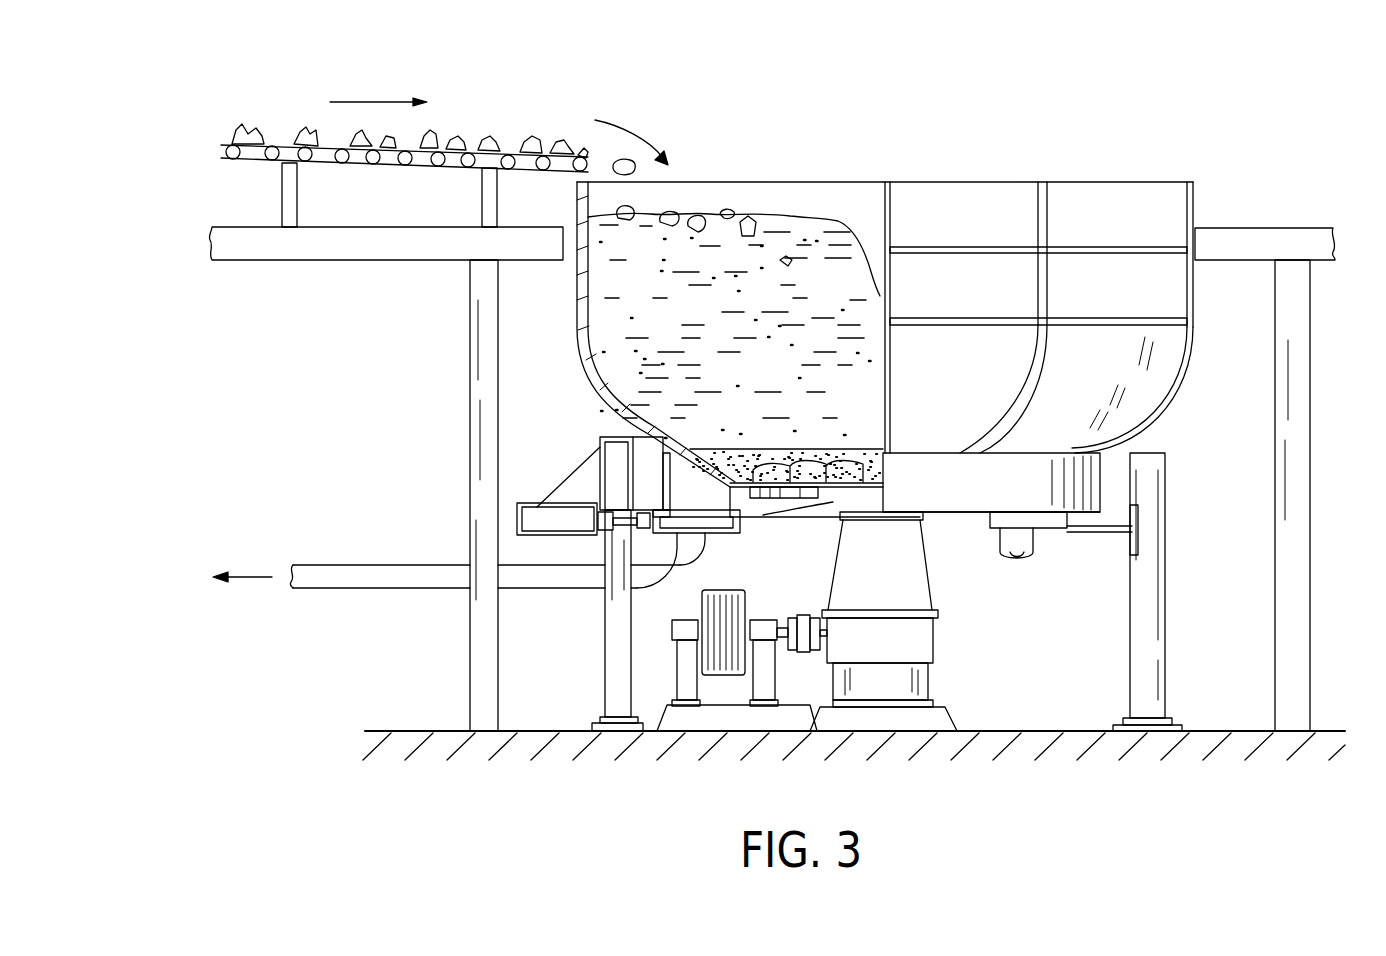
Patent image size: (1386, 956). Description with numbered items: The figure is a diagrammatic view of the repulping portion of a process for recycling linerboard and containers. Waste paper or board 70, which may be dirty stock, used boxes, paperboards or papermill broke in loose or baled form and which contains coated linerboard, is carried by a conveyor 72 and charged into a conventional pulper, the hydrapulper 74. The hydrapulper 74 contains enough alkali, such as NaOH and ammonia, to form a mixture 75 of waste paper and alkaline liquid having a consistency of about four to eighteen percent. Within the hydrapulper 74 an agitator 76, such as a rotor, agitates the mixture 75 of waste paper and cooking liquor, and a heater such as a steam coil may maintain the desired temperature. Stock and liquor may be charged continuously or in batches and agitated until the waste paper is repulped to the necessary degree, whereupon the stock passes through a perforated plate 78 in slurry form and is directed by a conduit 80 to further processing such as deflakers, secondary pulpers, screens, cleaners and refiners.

The waste paper or board 70 is at (497, 147).
The conveyor 72 is at (283, 145).
The hydrapulper 74 is at (1197, 207).
The mixture 75 is at (787, 270).
The agitator 76 is at (813, 492).
The perforated plate 78 is at (795, 457).
The conduit 80 is at (402, 567).